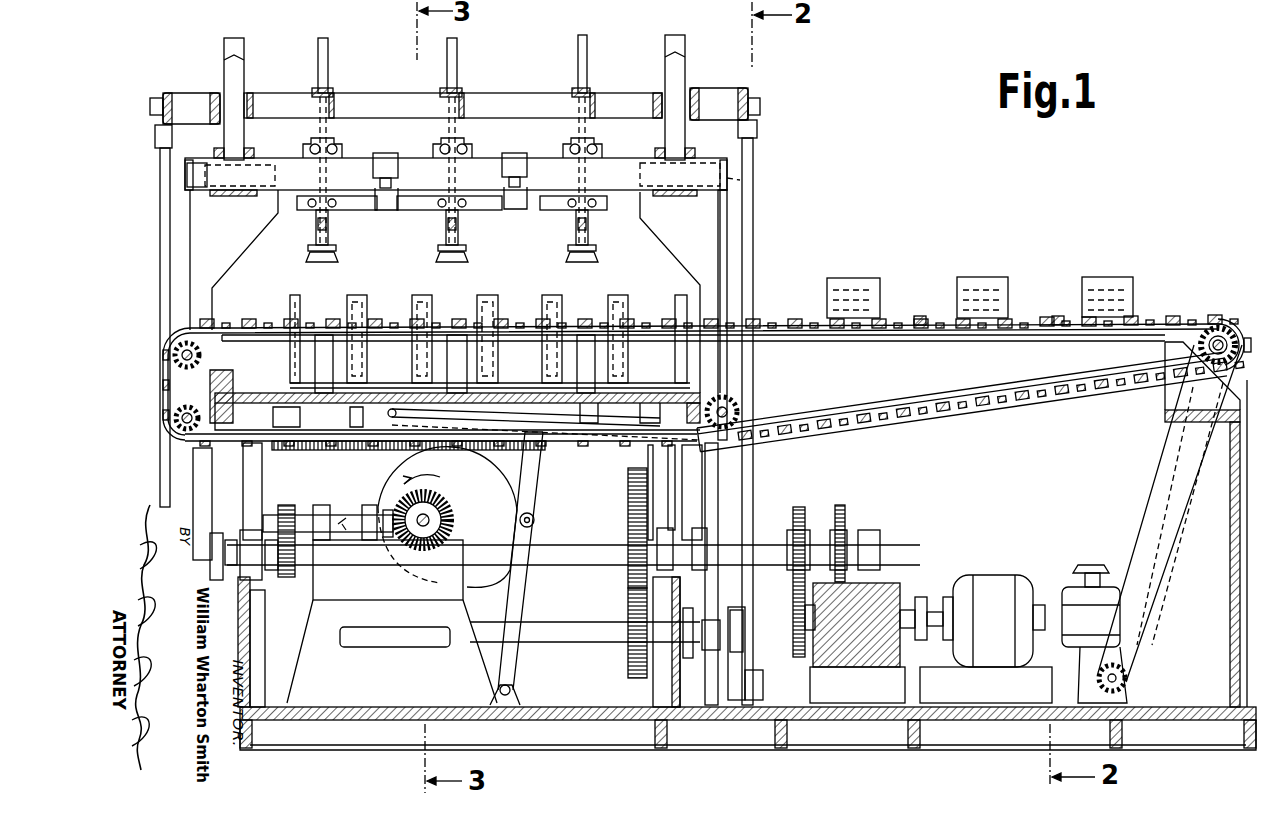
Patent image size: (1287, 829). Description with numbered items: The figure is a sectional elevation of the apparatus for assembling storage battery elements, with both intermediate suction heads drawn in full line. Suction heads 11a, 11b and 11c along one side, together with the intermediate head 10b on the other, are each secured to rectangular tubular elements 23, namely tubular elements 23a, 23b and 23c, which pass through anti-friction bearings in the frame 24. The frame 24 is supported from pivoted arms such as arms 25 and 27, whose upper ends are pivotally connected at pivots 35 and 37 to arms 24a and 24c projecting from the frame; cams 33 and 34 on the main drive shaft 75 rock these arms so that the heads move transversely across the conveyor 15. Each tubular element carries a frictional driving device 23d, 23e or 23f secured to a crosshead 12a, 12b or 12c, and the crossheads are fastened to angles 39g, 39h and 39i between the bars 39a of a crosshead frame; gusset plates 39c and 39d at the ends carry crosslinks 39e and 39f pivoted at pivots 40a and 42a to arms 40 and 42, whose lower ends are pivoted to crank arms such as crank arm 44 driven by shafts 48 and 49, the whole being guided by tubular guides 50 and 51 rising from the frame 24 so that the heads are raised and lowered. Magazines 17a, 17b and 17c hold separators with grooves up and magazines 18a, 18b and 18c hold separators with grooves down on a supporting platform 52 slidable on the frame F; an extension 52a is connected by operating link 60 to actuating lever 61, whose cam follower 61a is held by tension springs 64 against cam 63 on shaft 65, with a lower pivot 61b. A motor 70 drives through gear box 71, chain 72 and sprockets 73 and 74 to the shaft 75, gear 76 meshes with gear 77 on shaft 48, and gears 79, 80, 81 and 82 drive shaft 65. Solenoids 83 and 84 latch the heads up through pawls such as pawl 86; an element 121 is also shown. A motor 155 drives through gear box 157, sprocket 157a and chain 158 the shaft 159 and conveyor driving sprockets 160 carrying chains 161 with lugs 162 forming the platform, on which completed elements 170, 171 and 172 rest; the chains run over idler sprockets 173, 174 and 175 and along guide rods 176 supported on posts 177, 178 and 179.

The suction head 10b is at (444, 255).
The suction head 11a is at (596, 258).
The suction head 11b is at (466, 258).
The suction head 11c is at (334, 258).
The crosshead 12a is at (596, 95).
The crosshead 12b is at (465, 95).
The crosshead 12c is at (334, 95).
The movable platform or conveyor 15 is at (930, 361).
The magazine 17a is at (562, 302).
The magazine 17b is at (432, 302).
The magazine 17c is at (300, 300).
The magazine 18a is at (628, 302).
The magazine 18b is at (498, 302).
The magazine 18c is at (367, 302).
The tubular elements 23 is at (600, 149).
The tubular element 23a is at (587, 60).
The tubular element 23b is at (457, 60).
The tubular element 23c is at (328, 60).
The frictional driving device 23d is at (572, 92).
The frictional driving device 23e is at (440, 92).
The frictional driving device 23f is at (312, 91).
The frame 24 is at (452, 158).
The arm 24a is at (672, 190).
The arm 24c is at (228, 192).
The arm 25 is at (727, 232).
The arm 27 is at (222, 278).
The cam 33 is at (713, 480).
The cam 34 is at (200, 468).
The pivot 35 is at (752, 185).
The pivot 37 is at (190, 178).
The rectangular bar 39a is at (312, 120).
The gusset plate 39c is at (715, 88).
The gusset plate 39d is at (170, 93).
The crosslink 39e is at (748, 96).
The crosslink 39f is at (152, 100).
The angle 39g is at (597, 105).
The angle 39h is at (466, 105).
The angle 39i is at (336, 105).
The arm 40 is at (753, 175).
The pivot 40a is at (760, 106).
The arm 42 is at (160, 180).
The pivot 42a is at (155, 128).
The crank arm 44 is at (730, 670).
The shaft 48 is at (560, 626).
The shaft 49 is at (350, 636).
The cylindrical tubular guide 50 is at (685, 60).
The cylindrical tubular guide 51 is at (224, 75).
The supporting platform 52 is at (500, 393).
The extension 52a is at (392, 405).
The operating link 60 is at (378, 490).
The actuating lever 61 is at (540, 472).
The cam follower 61a is at (535, 521).
The pivot 61b is at (512, 688).
The cam 63 is at (440, 585).
The tension springs 64 is at (340, 452).
The shaft 65 is at (430, 520).
The motor 70 is at (975, 580).
The gear box 71 is at (910, 608).
The chain 72 is at (813, 590).
The sprocket 73 is at (806, 628).
The sprocket 74 is at (805, 515).
The main drive shaft 75 is at (763, 545).
The gear 76 is at (628, 478).
The gear 77 is at (628, 670).
The gear 79 is at (287, 578).
The gear 80 is at (287, 505).
The gear 81 is at (387, 510).
The gear 82 is at (450, 511).
The solenoid 83 is at (390, 153).
The solenoid 84 is at (516, 153).
The pawl 86 is at (576, 229).
The cam 121 is at (845, 520).
The motor 155 is at (1066, 590).
The gear box 157 is at (1085, 665).
The sprocket 157a is at (1120, 676).
The chain 158 is at (1135, 553).
The shaft 159 is at (1224, 340).
The conveyor driving sprockets 160 is at (1212, 332).
The conveyor chains 161 is at (1060, 316).
The lugs 162 is at (920, 316).
The completed element 170 is at (838, 285).
The completed element 171 is at (975, 285).
The completed element 172 is at (1092, 285).
The idler sprocket 173 is at (740, 405).
The idler sprocket 174 is at (176, 414).
The idler sprocket 175 is at (176, 352).
The guide rod 176 is at (825, 341).
The post 177 is at (595, 354).
The post 178 is at (455, 335).
The post 179 is at (315, 357).
The frame F is at (240, 498).